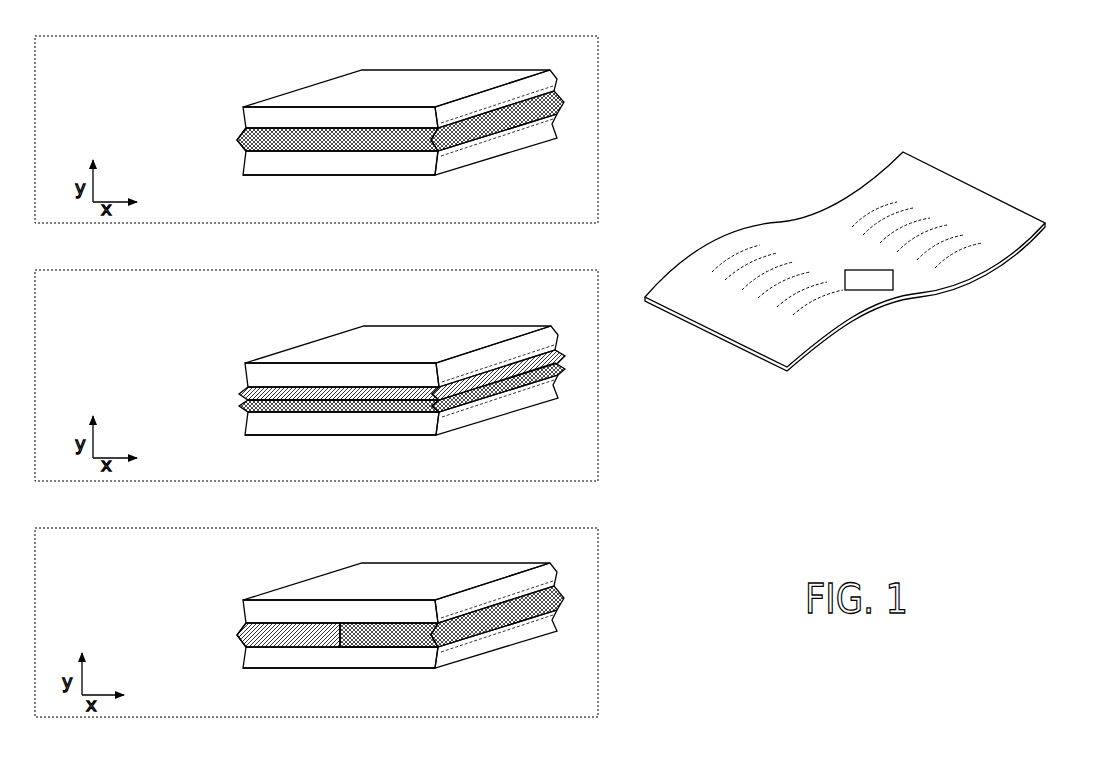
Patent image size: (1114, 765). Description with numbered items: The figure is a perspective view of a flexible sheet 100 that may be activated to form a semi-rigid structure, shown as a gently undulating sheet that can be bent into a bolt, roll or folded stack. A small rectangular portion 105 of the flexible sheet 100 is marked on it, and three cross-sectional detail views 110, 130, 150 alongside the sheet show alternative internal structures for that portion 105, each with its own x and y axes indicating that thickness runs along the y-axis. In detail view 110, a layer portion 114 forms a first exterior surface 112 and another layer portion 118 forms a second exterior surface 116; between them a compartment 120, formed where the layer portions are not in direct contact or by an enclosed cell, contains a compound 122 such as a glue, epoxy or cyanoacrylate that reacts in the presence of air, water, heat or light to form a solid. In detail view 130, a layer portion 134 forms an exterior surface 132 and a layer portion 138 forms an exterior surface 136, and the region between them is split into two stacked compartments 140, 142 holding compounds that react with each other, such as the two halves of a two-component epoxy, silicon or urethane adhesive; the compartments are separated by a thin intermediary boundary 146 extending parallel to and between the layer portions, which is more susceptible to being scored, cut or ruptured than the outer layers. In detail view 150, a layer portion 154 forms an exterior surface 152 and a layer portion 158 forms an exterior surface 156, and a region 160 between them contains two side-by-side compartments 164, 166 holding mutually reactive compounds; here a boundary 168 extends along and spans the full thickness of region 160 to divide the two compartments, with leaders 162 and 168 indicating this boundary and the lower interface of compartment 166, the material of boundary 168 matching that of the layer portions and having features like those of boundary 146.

The flexible sheet 100 is at (760, 166).
The portion 105 is at (879, 292).
The cross-sectional detail view 110 is at (528, 36).
The first exterior surface 112 is at (348, 86).
The layer portion 114 is at (429, 96).
The second exterior surface 116 is at (412, 180).
The layer portion 118 is at (332, 174).
The compartment 120 is at (232, 139).
The compound 122 is at (309, 150).
The cross-sectional detail view 130 is at (528, 270).
The exterior surface 132 is at (348, 343).
The layer portion 134 is at (429, 356).
The exterior surface 136 is at (412, 440).
The layer portion 138 is at (332, 431).
The compartment 140 is at (234, 393).
The compartment 142 is at (234, 405).
The boundary 146 is at (361, 403).
The cross-sectional detail view 150 is at (528, 528).
The exterior surface 152 is at (348, 581).
The layer portion 154 is at (429, 590).
The exterior surface 156 is at (412, 673).
The layer portion 158 is at (307, 668).
The region 160 is at (231, 633).
The interface of second adhesive region 162 is at (378, 651).
The compartment 164 is at (307, 643).
The compartment 166 is at (397, 643).
The boundary 168 is at (348, 640).